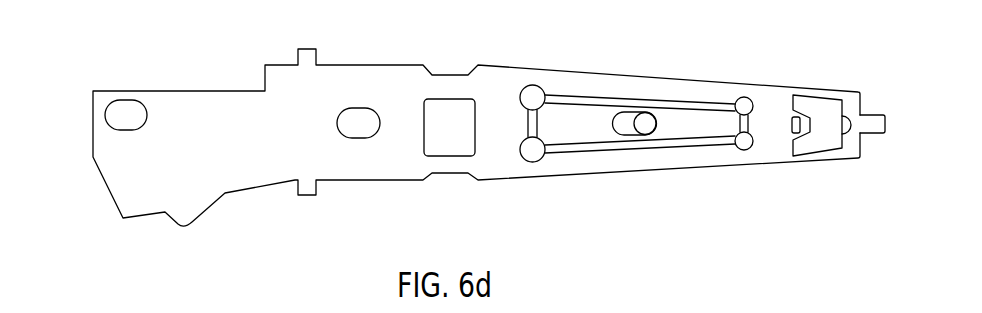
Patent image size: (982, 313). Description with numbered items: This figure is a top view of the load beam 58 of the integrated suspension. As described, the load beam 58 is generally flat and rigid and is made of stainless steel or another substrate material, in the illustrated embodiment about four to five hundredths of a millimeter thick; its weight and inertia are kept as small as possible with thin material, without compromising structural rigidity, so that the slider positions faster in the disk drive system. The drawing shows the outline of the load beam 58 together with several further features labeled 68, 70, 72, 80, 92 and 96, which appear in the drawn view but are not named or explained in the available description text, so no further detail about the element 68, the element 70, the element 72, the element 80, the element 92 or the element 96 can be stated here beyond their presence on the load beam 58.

The load beam 58 is at (372, 202).
The flexure 68 is at (565, 120).
The flexure arms 70 is at (670, 76).
The tab 72 is at (872, 137).
The latch member 80 is at (810, 118).
The stop 92 is at (792, 120).
The flexure end 96 is at (812, 96).